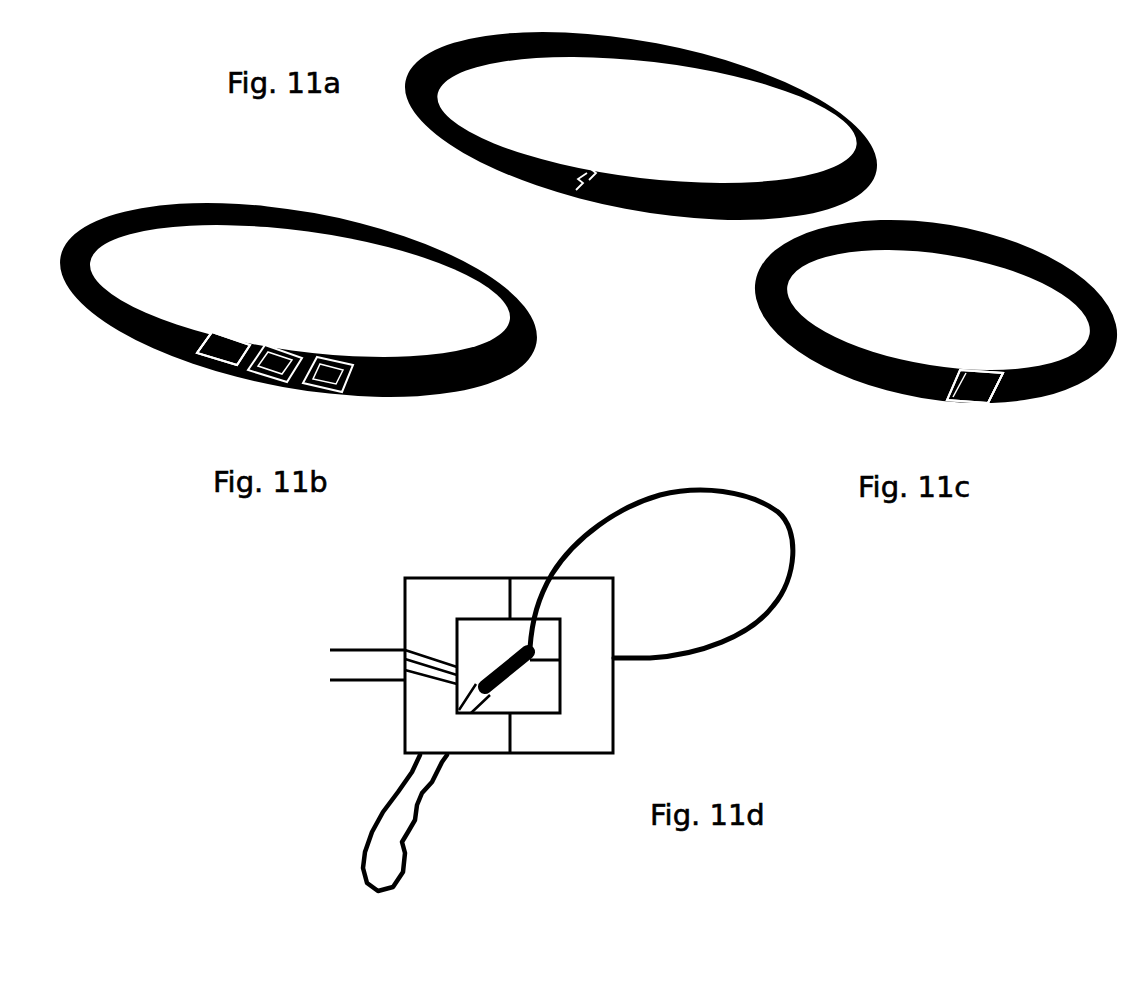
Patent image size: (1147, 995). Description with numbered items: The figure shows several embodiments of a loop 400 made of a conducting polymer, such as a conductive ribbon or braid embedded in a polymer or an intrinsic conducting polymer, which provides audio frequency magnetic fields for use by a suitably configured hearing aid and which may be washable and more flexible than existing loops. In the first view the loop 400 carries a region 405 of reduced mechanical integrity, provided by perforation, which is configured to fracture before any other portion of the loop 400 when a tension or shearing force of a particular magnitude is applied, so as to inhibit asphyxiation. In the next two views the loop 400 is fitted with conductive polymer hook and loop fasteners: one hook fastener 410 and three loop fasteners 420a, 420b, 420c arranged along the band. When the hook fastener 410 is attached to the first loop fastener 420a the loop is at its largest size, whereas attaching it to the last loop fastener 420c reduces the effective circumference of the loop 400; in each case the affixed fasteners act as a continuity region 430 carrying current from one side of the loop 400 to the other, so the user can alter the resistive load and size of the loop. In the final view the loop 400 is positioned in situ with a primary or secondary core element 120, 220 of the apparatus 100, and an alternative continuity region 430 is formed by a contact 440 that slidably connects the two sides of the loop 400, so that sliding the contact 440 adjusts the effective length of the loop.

In FIG. 11D, the apparatus 100 is at (382, 628).
In FIG. 11D, the primary core element 120 is at (417, 733).
In FIG. 11D, the secondary core element 220 is at (582, 745).
In FIG. 11A, the loop 400 is at (812, 100).
In FIG. 11B, the loop 400 is at (167, 230).
In FIG. 11C, the loop 400 is at (998, 248).
In FIG. 11D, the loop 400 is at (663, 492).
In FIG. 11A, the region of reduced integrity 405 is at (585, 185).
In FIG. 11B, the hook fastener 410 is at (228, 347).
In FIG. 11C, the hook fastener 410 is at (987, 370).
In FIG. 11B, the first loop fastener 420a is at (203, 358).
In FIG. 11B, the second loop fastener 420b is at (267, 373).
In FIG. 11B, the last loop fastener 420c is at (322, 384).
In FIG. 11C, the last loop fastener 420c is at (967, 402).
In FIG. 11B, the continuity region 430 is at (163, 355).
In FIG. 11C, the continuity region 430 is at (990, 405).
In FIG. 11D, the continuity region 430 is at (533, 683).
In FIG. 11D, the contact 440 is at (505, 658).